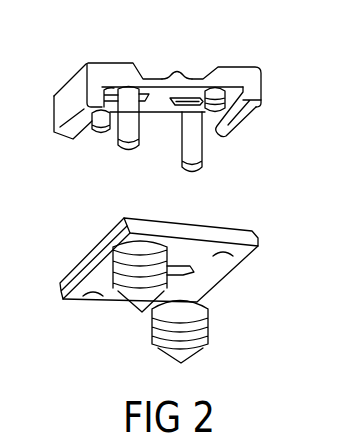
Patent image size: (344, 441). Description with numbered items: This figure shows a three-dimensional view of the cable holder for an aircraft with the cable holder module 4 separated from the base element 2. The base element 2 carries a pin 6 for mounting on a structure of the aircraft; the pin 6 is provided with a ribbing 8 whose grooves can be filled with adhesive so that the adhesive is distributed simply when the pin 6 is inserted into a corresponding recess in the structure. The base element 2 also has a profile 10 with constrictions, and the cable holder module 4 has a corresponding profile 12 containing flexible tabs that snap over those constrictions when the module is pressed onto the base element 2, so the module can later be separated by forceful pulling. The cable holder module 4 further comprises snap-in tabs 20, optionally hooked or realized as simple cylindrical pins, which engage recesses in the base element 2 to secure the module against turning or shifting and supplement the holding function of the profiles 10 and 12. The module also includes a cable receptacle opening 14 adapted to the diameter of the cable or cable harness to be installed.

The base element 2 is at (254, 236).
The cable holder module 4 is at (250, 78).
The pin 6 is at (187, 352).
The ribbing 8 is at (198, 315).
The profile 10 is at (87, 256).
The profile 12 is at (250, 98).
The cable receptacle opening 14 is at (173, 73).
The snap-in tab 20 is at (102, 137).